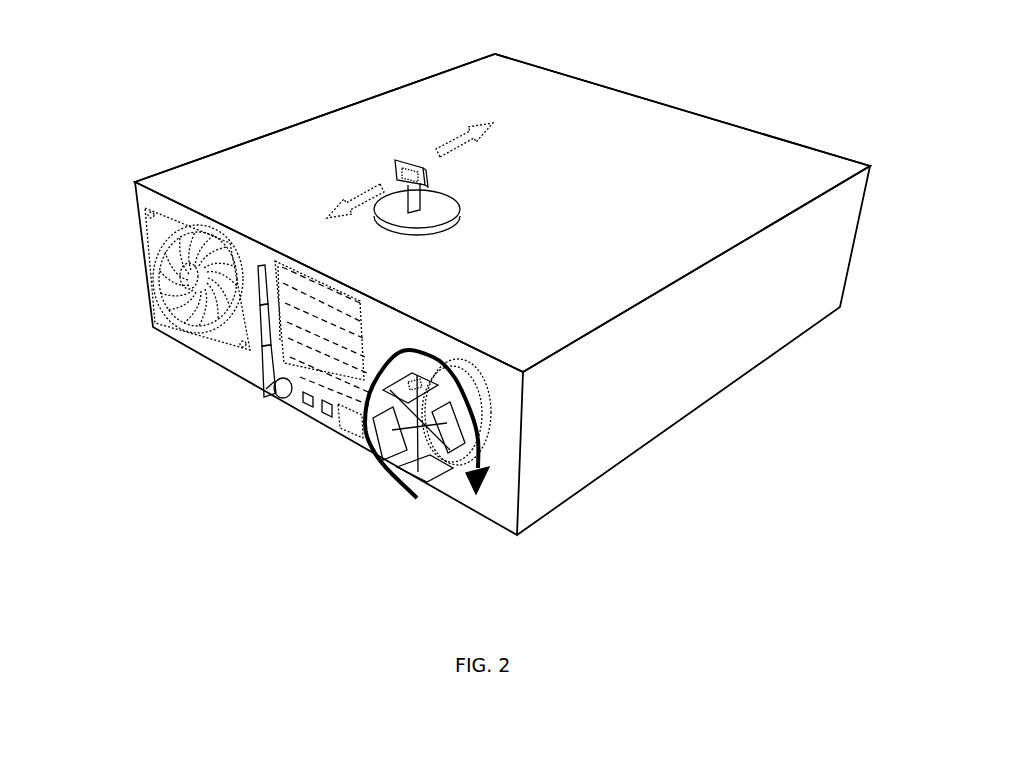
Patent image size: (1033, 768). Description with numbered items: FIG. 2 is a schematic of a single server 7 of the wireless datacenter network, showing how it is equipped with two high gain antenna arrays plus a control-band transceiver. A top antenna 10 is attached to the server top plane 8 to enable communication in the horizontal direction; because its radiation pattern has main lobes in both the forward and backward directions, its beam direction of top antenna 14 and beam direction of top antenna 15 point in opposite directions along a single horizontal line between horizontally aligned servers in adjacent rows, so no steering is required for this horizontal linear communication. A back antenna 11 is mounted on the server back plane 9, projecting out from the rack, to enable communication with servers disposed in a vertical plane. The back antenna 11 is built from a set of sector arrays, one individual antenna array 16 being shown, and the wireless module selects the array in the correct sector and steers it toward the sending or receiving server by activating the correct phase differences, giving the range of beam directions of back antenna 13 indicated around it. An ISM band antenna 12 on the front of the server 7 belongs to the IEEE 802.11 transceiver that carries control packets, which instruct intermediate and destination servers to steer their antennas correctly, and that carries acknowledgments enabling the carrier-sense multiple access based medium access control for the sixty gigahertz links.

The server 7 is at (843, 251).
The server top plane 8 is at (743, 137).
The server back plane 9 is at (135, 188).
The top antenna 10 is at (410, 162).
The back antenna 11 is at (412, 477).
The ISM band antenna 12 is at (267, 397).
The beam directions of back antenna 13 is at (370, 455).
The beam direction of top antenna 14 is at (345, 203).
The beam direction of top antenna 15 is at (467, 135).
The individual antenna array 16 is at (463, 427).